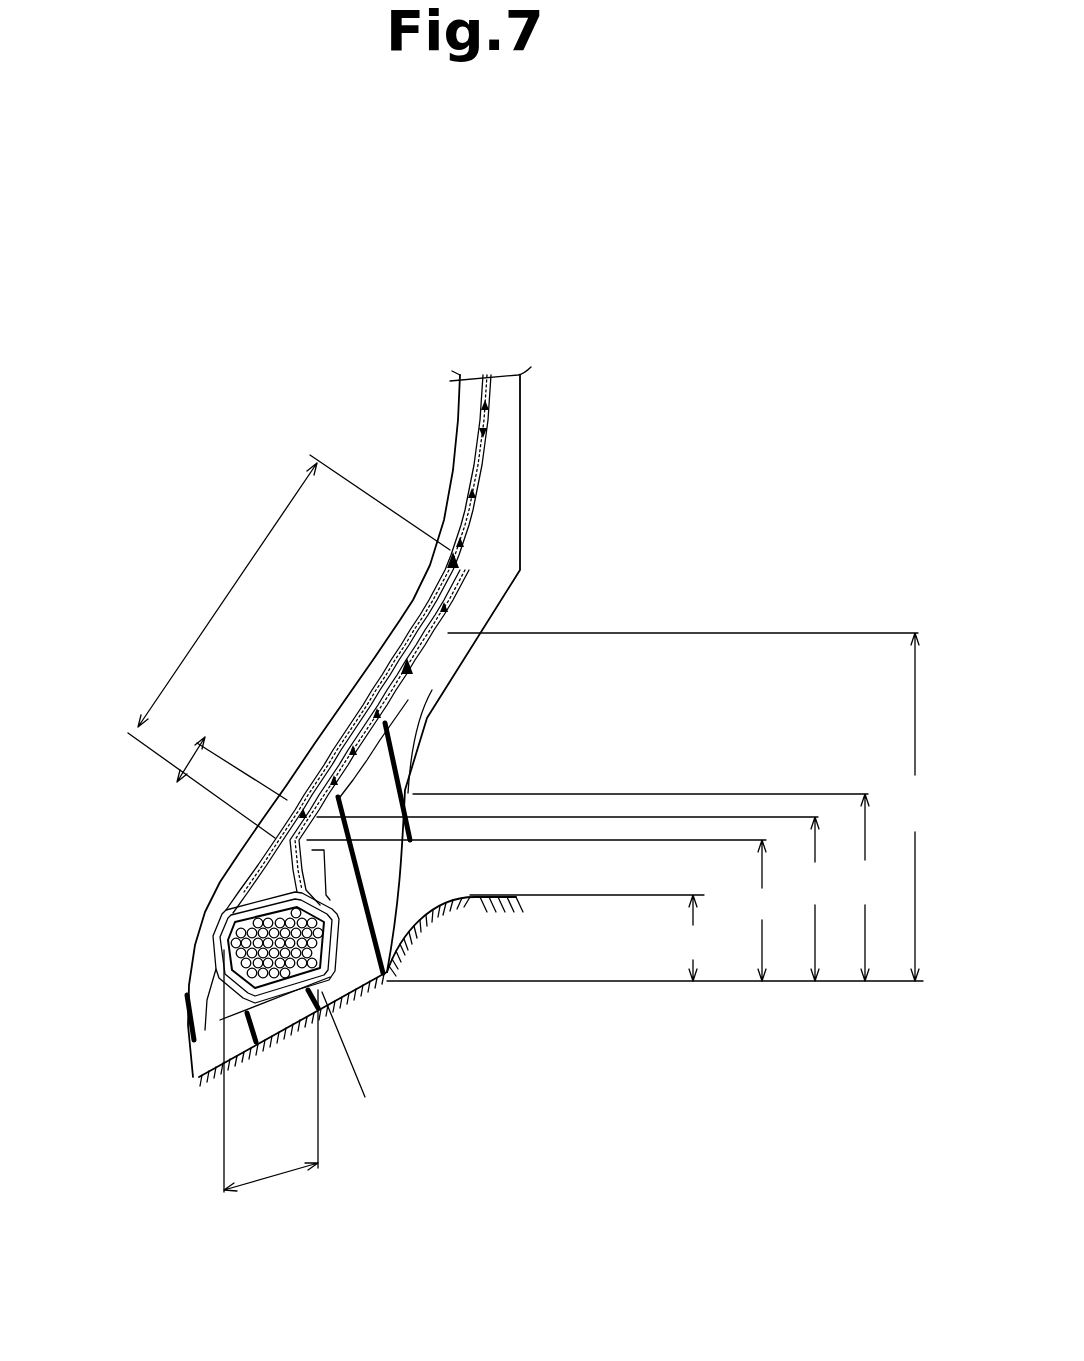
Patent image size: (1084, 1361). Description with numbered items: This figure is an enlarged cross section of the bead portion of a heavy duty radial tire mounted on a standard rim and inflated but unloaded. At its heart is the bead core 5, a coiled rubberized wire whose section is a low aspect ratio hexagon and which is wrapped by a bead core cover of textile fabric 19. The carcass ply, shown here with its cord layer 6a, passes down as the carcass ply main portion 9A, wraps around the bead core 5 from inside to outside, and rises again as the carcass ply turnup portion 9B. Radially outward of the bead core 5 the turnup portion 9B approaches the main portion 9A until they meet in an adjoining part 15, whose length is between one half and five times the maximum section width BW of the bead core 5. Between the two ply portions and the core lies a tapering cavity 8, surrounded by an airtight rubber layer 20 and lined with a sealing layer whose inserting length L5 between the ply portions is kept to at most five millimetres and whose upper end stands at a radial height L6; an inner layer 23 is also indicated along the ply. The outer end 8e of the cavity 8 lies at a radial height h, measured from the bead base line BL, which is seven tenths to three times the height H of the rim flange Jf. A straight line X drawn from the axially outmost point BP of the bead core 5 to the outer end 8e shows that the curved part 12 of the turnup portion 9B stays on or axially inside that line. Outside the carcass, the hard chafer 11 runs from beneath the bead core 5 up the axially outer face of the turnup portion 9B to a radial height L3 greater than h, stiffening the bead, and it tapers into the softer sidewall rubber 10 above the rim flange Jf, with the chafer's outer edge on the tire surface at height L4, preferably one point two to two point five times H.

The bead core 5 is at (235, 958).
The carcass ply 6a is at (689, 479).
The cavity 8 is at (248, 900).
The outer end of the cavity 8e is at (266, 833).
The carcass ply main portion 9A is at (473, 500).
The carcass ply turnup portion 9B is at (463, 578).
The sidewall rubber 10 is at (445, 675).
The chafer 11 is at (402, 733).
The curved part 12 is at (327, 872).
The adjoining part 15 is at (228, 607).
The textile fabric bead core cover 19 is at (228, 945).
The airtight rubber layer 20 is at (267, 902).
The inner layer 23 is at (392, 688).
The axially outmost point of the bead core BP is at (340, 952).
The straight line X is at (362, 1097).
The maximum section width of the bead core BW is at (270, 1178).
The bead base line BL is at (650, 985).
The rim flange Jf is at (473, 902).
The radial height of the chafer L3 is at (688, 807).
The radial height of the chafer outer edge L4 is at (646, 887).
The inserting length of the sealing layer L5 is at (198, 744).
The radial height of the upper end of the sealing layer L6 is at (574, 899).
The radial height of the cavity outer end h is at (537, 910).
The flange height H is at (587, 938).